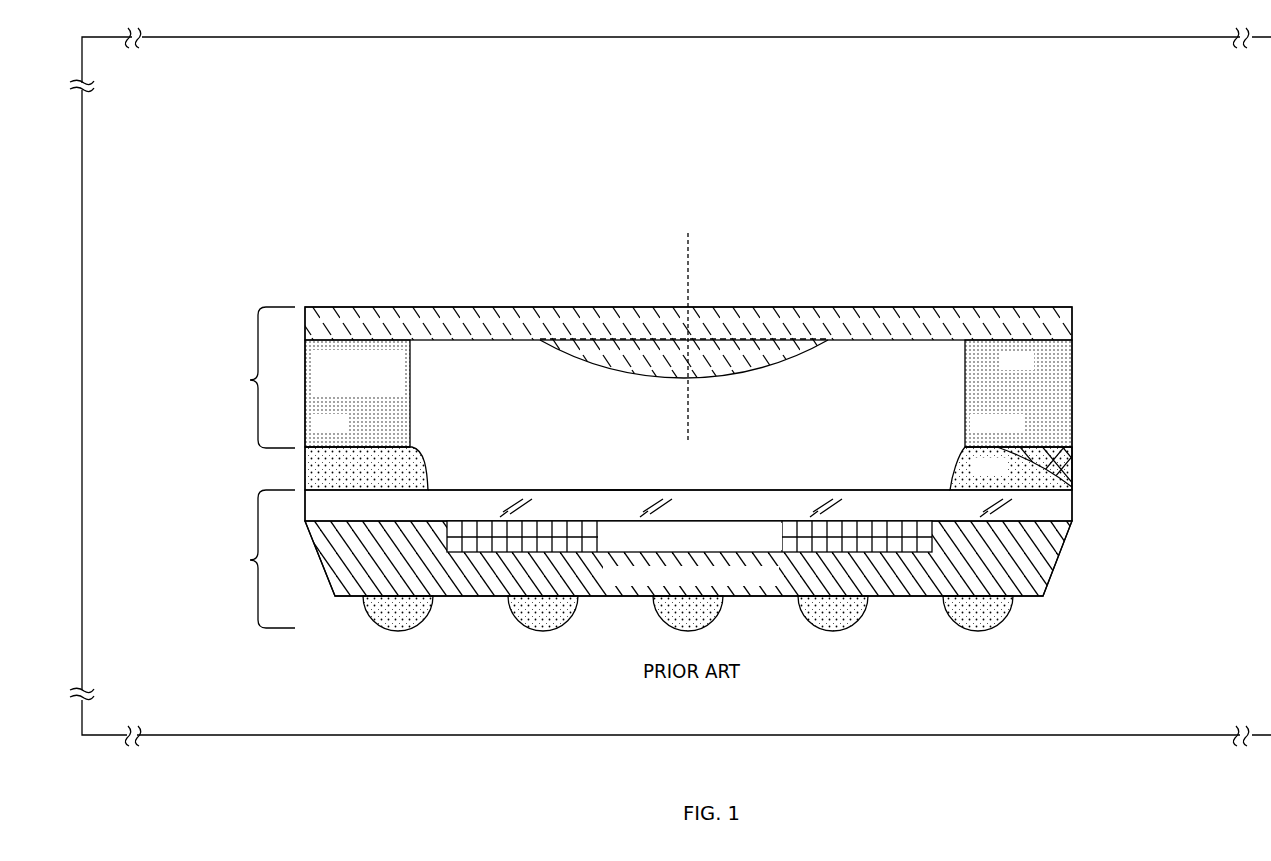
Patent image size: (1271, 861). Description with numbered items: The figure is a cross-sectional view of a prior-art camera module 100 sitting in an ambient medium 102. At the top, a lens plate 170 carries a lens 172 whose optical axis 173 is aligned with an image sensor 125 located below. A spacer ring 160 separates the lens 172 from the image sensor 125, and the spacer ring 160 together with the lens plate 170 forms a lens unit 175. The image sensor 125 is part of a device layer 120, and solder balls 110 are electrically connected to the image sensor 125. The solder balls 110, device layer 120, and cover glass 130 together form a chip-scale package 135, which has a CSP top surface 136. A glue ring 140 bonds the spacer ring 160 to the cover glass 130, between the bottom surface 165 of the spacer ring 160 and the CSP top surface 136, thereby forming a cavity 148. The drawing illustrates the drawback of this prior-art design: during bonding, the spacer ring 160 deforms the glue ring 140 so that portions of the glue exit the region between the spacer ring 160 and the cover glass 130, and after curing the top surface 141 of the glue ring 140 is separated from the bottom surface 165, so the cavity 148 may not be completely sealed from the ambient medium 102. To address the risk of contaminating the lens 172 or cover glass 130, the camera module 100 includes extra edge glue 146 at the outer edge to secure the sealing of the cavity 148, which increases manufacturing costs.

The camera module 100 is at (246, 228).
The ambient medium 102 is at (355, 117).
The solder balls 110 is at (414, 623).
The device layer 120 is at (777, 586).
The image sensor 125 is at (780, 546).
The cover glass 130 is at (480, 515).
The chip-scale package 135 is at (250, 559).
The CSP top surface 136 is at (603, 482).
The glue ring 140 is at (305, 468).
The top surface of glue ring 141 is at (1030, 456).
The extra edge glue 146 is at (1076, 456).
The cavity 148 is at (808, 463).
The spacer ring 160 is at (1030, 371).
The bottom surface 165 is at (372, 437).
The lens plate 170 is at (468, 334).
The lens 172 is at (563, 343).
The optical axis 173 is at (688, 288).
The lens unit 175 is at (251, 377).